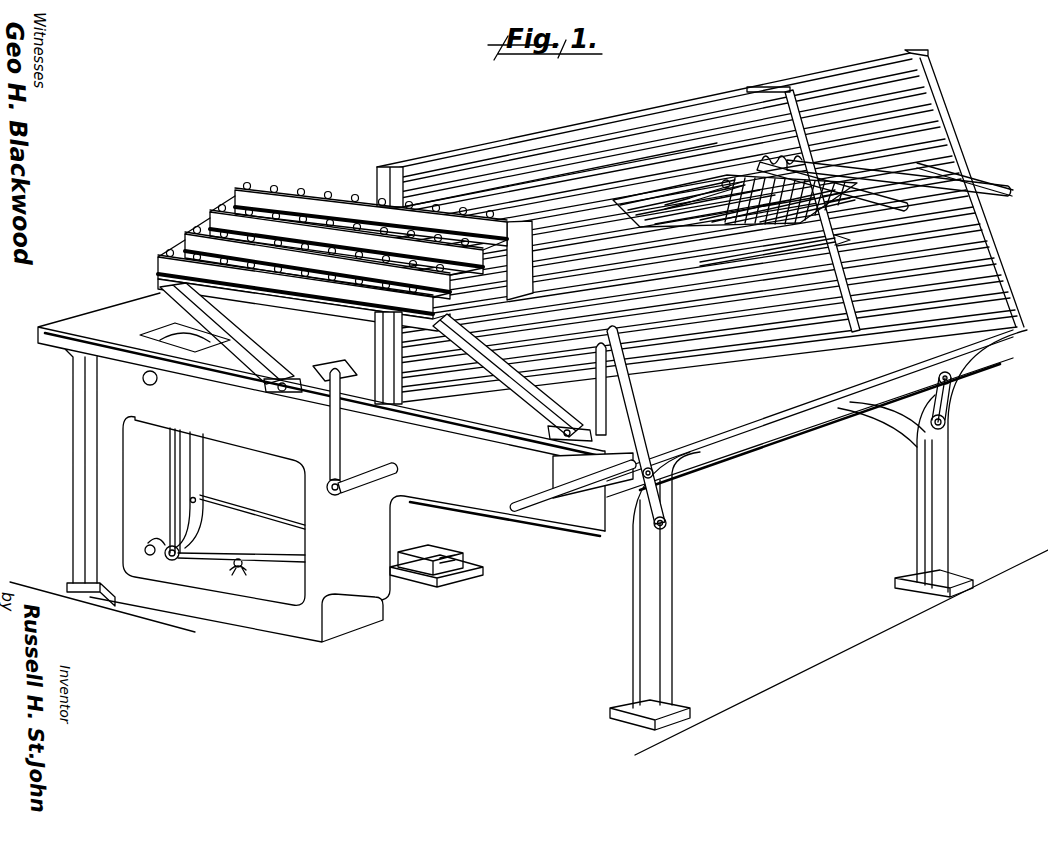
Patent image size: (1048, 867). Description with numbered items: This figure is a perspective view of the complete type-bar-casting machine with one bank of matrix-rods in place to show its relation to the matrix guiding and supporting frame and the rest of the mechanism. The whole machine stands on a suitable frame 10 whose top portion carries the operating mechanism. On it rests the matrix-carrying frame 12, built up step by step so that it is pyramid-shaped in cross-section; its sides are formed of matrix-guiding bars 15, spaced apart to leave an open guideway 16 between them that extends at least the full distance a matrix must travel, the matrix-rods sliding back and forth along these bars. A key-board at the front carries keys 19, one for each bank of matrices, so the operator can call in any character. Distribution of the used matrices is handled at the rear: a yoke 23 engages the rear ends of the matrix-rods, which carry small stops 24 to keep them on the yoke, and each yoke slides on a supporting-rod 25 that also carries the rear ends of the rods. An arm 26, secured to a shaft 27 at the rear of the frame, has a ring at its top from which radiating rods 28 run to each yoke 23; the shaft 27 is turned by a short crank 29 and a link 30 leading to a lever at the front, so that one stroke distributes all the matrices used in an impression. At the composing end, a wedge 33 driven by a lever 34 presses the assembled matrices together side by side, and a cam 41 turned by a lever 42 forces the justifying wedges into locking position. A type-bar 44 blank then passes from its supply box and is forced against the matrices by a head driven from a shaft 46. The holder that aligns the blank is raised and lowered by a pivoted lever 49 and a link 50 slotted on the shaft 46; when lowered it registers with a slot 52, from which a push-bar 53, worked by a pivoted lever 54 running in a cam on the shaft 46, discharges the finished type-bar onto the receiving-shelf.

The frame 10 is at (532, 511).
The matrix-carrying frame 12 is at (787, 205).
The matrix-guiding bars 15 is at (604, 132).
The guideway 16 is at (541, 150).
The keys 19 is at (318, 192).
The yoke 23 is at (995, 185).
The stops 24 is at (972, 182).
The supporting-rod 25 is at (872, 75).
The arm 26 is at (770, 168).
The shaft 27 is at (895, 413).
The radiating rods 28 is at (980, 205).
The crank 29 is at (946, 400).
The link 30 is at (783, 437).
The wedge 33 is at (708, 182).
The lever 34 is at (528, 500).
The cam 41 is at (366, 484).
The lever 42 is at (338, 440).
The type-bar 44 is at (448, 554).
The shaft 46 is at (838, 240).
The pivoted lever 49 is at (278, 556).
The link 50 is at (170, 476).
The slot 52 is at (428, 548).
The push-bar 53 is at (258, 516).
The pivoted lever 54 is at (203, 460).